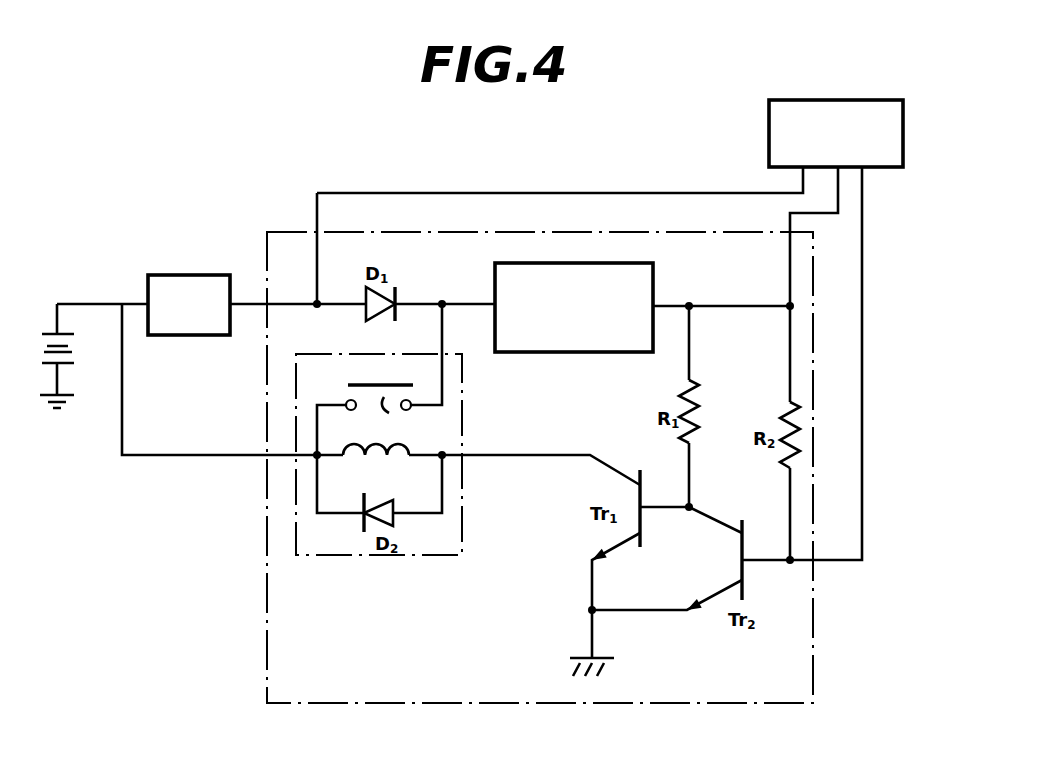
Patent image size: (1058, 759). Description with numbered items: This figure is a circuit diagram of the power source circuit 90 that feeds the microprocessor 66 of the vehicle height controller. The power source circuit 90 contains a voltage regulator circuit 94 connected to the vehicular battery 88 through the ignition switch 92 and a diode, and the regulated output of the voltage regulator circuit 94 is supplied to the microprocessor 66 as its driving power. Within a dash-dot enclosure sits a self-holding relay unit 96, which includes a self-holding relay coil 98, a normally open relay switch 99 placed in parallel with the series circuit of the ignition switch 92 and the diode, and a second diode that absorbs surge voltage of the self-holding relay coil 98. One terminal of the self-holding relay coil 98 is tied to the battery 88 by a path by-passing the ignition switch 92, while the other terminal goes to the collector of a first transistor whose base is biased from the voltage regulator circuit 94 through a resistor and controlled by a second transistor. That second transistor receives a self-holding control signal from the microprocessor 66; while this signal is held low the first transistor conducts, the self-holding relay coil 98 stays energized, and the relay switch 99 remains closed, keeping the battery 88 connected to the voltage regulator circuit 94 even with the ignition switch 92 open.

The microprocessor 66 is at (806, 98).
The vehicular battery 88 is at (42, 402).
The power source circuit 90 is at (553, 705).
The ignition switch 92 is at (213, 275).
The voltage regulator circuit 94 is at (654, 275).
The self-holding relay unit 96 is at (397, 558).
The self-holding relay coil 98 is at (398, 457).
The normally open relay switch 99 is at (389, 413).